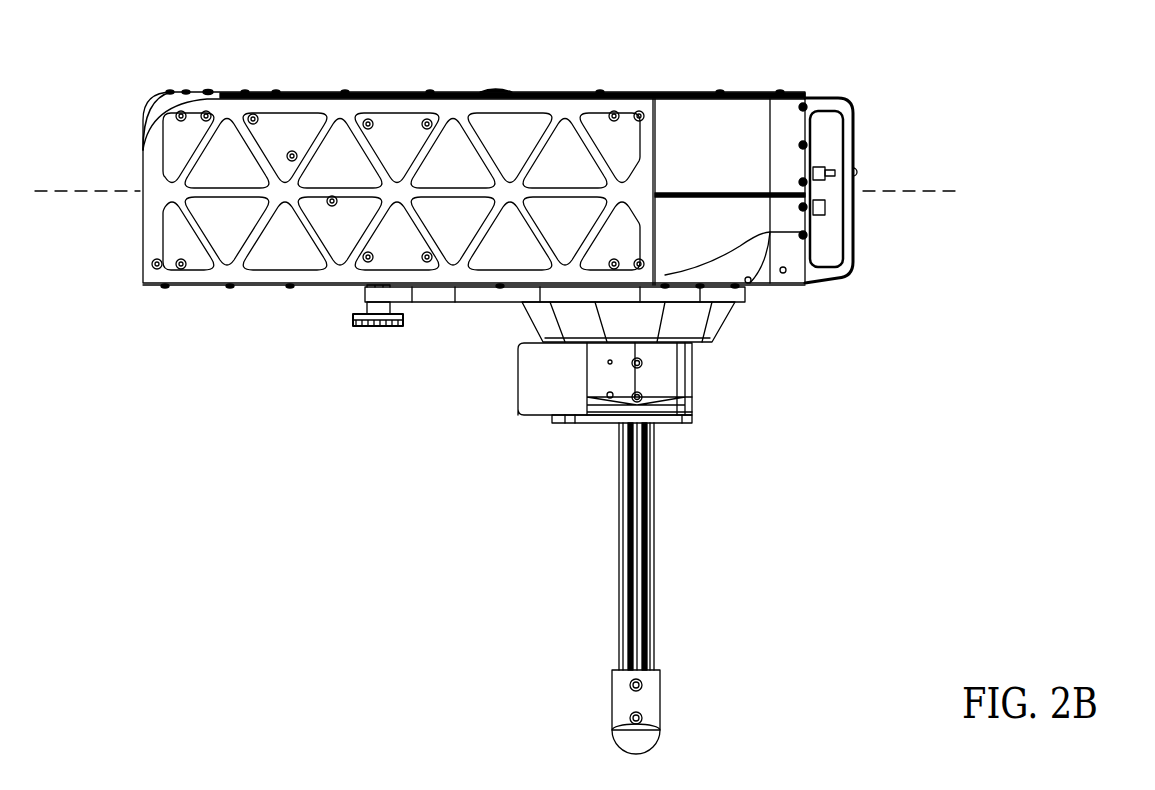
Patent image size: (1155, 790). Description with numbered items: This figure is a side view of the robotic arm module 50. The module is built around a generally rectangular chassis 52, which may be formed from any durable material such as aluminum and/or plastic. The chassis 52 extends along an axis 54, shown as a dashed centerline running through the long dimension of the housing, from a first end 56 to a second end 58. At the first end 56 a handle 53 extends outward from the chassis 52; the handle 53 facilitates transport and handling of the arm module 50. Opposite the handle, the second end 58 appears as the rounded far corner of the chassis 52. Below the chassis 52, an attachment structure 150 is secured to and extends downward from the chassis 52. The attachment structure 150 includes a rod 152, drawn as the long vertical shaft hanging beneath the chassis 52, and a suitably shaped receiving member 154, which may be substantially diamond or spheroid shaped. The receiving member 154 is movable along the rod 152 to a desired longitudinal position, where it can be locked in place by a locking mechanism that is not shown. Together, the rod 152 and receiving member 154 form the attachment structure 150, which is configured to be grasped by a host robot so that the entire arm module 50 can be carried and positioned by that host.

The robotic arm module 50 is at (482, 78).
The chassis 52 is at (313, 283).
The handle 53 is at (847, 136).
The axis 54 is at (930, 192).
The first end 56 is at (836, 80).
The second end 58 is at (143, 80).
The attachment structure 150 is at (728, 370).
The rod 152 is at (655, 607).
The receiving member 154 is at (690, 416).